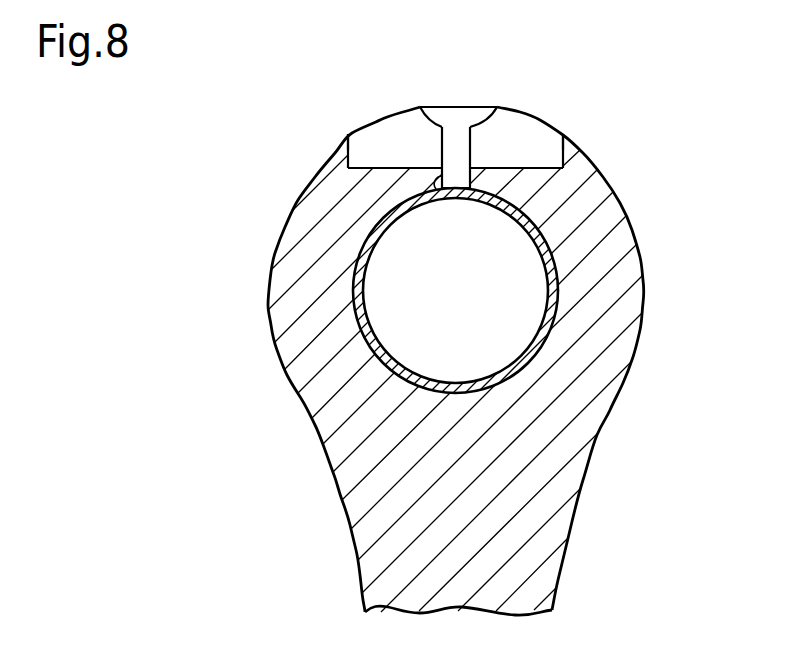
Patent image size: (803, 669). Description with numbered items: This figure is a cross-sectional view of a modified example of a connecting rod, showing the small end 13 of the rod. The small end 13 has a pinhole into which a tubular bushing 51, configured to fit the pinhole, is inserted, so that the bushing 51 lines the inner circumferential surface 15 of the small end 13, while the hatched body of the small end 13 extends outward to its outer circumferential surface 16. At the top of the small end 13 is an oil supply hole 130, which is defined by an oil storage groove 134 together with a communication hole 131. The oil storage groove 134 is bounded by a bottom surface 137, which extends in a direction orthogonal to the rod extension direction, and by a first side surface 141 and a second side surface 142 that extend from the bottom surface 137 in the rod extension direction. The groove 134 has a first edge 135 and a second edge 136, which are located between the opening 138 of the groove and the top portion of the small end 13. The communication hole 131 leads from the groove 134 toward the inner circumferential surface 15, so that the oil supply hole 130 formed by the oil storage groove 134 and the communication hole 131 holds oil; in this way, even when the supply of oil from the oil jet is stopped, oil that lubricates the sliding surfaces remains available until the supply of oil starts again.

The small end 13 is at (630, 262).
The inner circumferential surface 15 is at (355, 252).
The outer circumferential surface 16 is at (305, 178).
The tubular bushing 51 is at (373, 342).
The oil supply hole 130 is at (463, 82).
The communication hole 131 is at (447, 194).
The oil storage groove 134 is at (403, 127).
The first edge 135 is at (347, 134).
The second edge 136 is at (563, 135).
The bottom surface 137 is at (392, 160).
The opening 138 is at (483, 160).
The first side surface 141 is at (357, 133).
The second side surface 142 is at (550, 143).